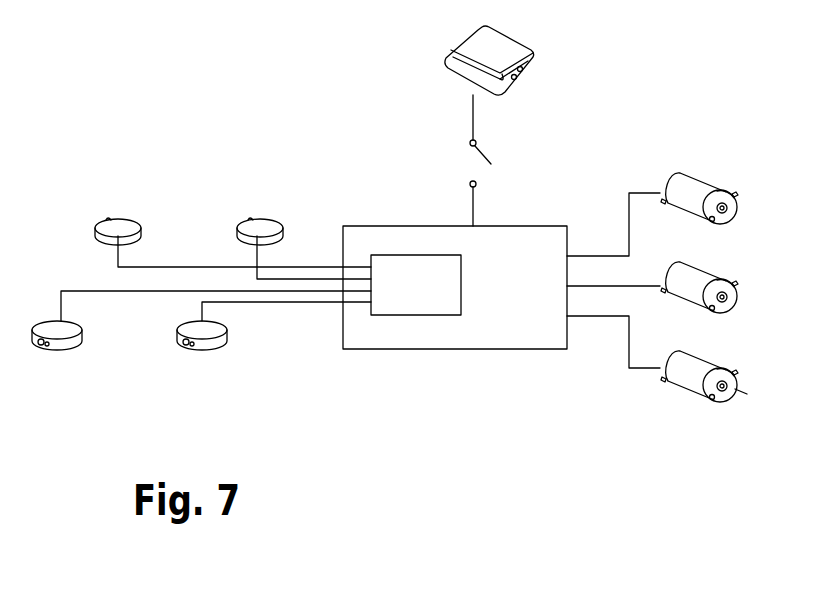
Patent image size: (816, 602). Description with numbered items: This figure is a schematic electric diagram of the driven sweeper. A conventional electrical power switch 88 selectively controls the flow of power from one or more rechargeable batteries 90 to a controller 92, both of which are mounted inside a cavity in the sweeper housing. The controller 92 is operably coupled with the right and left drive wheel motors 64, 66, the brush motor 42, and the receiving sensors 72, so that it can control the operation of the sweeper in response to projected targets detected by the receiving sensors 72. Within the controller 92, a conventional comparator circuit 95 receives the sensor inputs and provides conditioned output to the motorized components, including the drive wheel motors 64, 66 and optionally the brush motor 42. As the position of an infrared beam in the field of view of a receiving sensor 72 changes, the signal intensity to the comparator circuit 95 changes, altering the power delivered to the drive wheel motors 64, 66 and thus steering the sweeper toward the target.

The controller 92 is at (369, 221).
The comparator circuit 95 is at (412, 302).
The electrical power switch 88 is at (489, 157).
The rechargeable batteries 90 is at (507, 42).
The receiving sensors 72 is at (128, 225).
The right-hand drive motor 64 is at (712, 190).
The brush motor 42 is at (712, 280).
The left-hand drive motor 66 is at (712, 368).